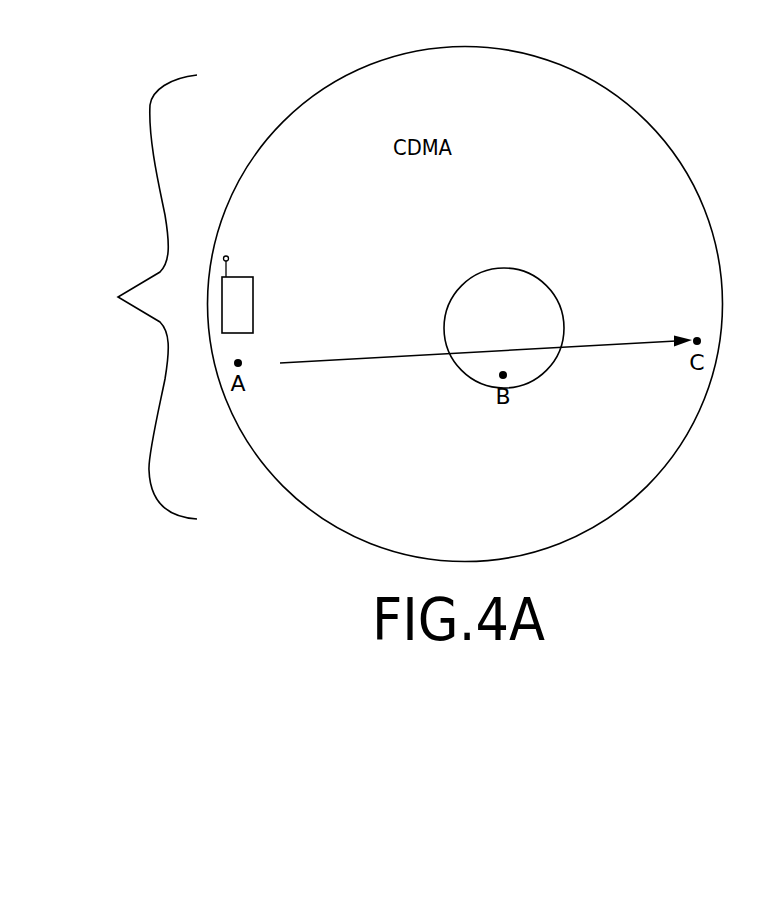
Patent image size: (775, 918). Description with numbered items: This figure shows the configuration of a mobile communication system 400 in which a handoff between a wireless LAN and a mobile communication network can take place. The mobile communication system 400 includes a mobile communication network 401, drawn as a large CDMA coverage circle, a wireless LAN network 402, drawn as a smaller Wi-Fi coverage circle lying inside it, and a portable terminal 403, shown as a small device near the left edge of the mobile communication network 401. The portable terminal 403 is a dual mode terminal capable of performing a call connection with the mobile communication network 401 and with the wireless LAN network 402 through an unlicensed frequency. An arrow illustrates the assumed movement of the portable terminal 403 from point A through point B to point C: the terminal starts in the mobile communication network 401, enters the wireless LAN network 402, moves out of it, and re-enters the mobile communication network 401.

The mobile communication system 400 is at (128, 302).
The mobile communication network 401 is at (659, 140).
The wireless LAN network 402 is at (543, 279).
The portable terminal 403 is at (253, 276).